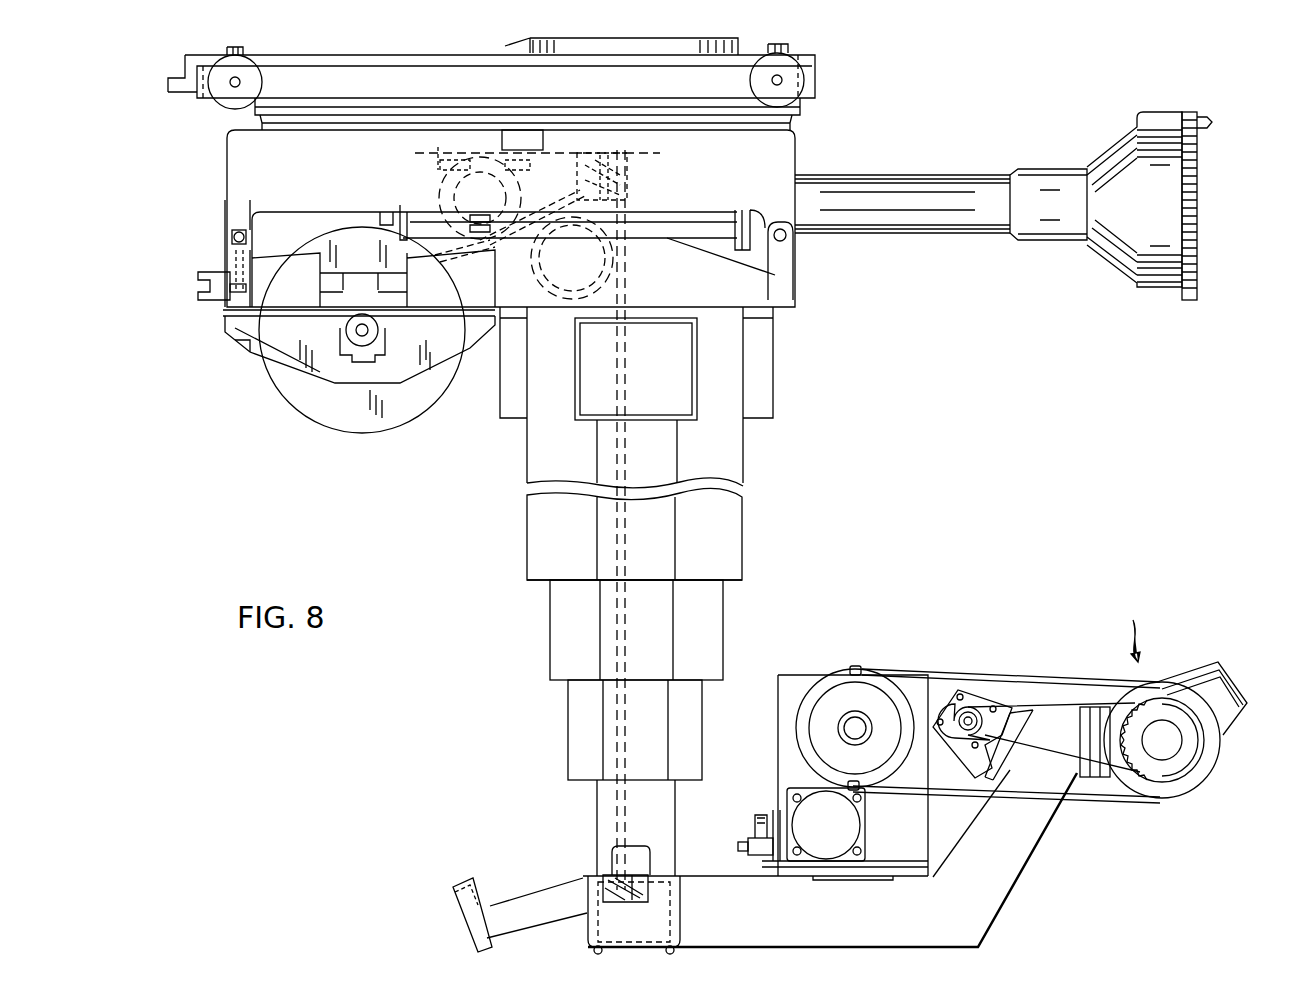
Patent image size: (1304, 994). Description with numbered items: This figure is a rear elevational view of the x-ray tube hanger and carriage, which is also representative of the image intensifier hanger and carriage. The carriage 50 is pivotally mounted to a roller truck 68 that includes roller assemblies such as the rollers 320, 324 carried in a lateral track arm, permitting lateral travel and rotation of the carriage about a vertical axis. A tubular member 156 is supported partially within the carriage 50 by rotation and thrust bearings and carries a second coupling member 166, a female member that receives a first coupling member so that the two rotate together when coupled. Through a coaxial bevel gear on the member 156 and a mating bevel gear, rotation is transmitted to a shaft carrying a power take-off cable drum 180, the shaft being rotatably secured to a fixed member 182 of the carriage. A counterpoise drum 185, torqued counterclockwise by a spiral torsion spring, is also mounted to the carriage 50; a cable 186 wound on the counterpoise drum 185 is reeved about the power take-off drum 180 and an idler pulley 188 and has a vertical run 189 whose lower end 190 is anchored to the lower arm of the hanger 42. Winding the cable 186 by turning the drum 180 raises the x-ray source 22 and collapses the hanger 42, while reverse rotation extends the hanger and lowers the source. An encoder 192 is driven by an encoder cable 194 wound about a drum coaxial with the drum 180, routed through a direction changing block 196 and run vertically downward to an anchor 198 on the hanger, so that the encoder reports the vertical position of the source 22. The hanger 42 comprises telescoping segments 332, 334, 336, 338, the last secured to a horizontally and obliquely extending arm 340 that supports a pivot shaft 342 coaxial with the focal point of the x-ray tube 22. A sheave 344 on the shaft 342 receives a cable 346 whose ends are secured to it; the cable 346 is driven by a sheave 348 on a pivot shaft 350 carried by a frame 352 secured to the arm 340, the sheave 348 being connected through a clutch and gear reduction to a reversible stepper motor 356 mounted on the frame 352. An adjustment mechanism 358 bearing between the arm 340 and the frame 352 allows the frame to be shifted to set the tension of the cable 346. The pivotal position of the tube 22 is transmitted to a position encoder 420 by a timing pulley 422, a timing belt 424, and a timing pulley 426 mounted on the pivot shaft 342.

The x-ray source 22 is at (1126, 629).
The hanger 42 is at (540, 563).
The carriage 50 is at (236, 162).
The roller truck 68 is at (333, 82).
The tubular member 156 is at (928, 192).
The second coupling member 166 is at (1197, 212).
The power take-off cable drum 180 is at (478, 192).
The fixed member 182 is at (438, 153).
The counterpoise drum 185 is at (318, 407).
The cable 186 is at (458, 252).
The idler pulley 188 is at (468, 190).
The vertical run 189 is at (615, 455).
The lower end 190 is at (616, 864).
The encoder 192 is at (542, 146).
The encoder cable 194 is at (636, 552).
The direction changing block 196 is at (624, 160).
The anchor 198 is at (632, 896).
The roller assembly 320 is at (802, 64).
The roller assembly 324 is at (218, 58).
The telescoping segment 332 is at (540, 538).
The telescoping segment 334 is at (565, 648).
The telescoping segment 336 is at (580, 718).
The telescoping segment 338 is at (602, 805).
The arm 340 is at (975, 915).
The pivot shaft 342 is at (1172, 746).
The sheave 344 is at (1162, 688).
The cable 346 is at (962, 680).
The sheave 348 is at (820, 692).
The pivot shaft 350 is at (850, 720).
The frame 352 is at (790, 748).
The reversible stepper motor 356 is at (865, 835).
The adjustment mechanism 358 is at (763, 845).
The position encoder 420 is at (975, 712).
The timing pulley 422 is at (982, 760).
The timing belt 424 is at (1068, 775).
The timing pulley 426 is at (1170, 768).